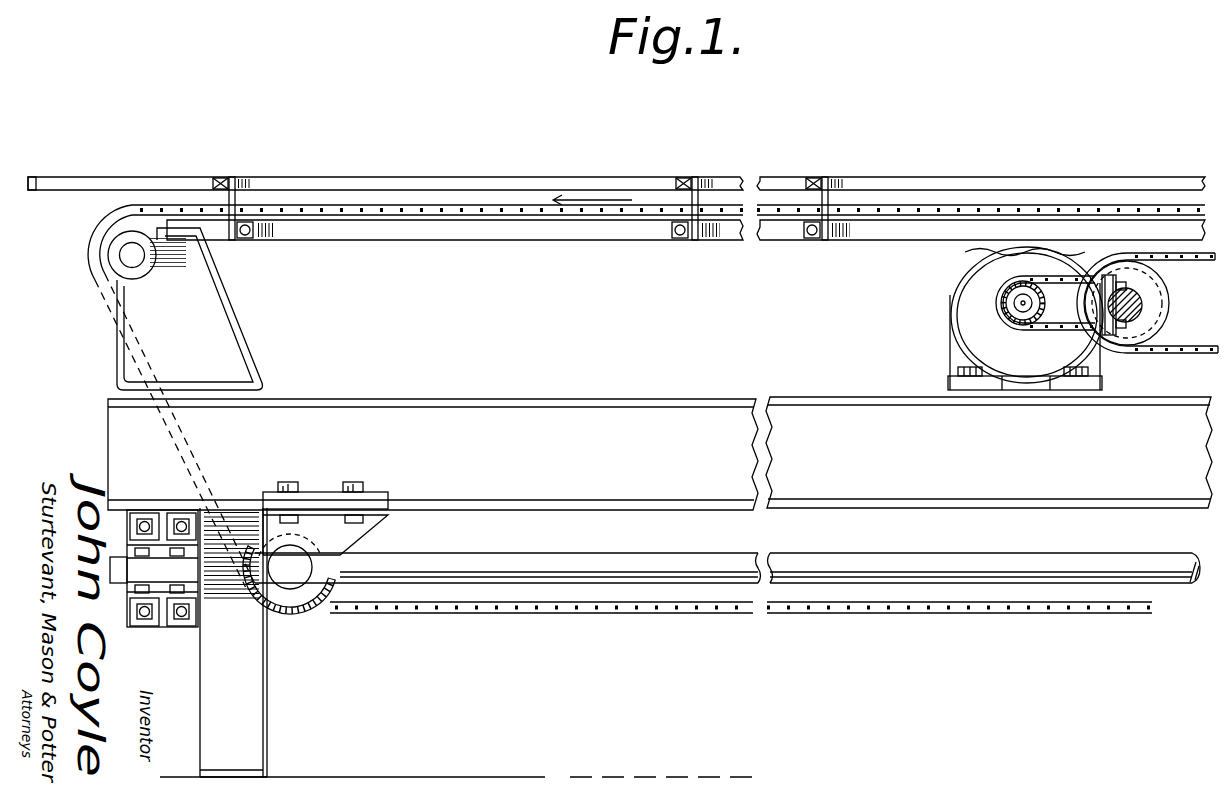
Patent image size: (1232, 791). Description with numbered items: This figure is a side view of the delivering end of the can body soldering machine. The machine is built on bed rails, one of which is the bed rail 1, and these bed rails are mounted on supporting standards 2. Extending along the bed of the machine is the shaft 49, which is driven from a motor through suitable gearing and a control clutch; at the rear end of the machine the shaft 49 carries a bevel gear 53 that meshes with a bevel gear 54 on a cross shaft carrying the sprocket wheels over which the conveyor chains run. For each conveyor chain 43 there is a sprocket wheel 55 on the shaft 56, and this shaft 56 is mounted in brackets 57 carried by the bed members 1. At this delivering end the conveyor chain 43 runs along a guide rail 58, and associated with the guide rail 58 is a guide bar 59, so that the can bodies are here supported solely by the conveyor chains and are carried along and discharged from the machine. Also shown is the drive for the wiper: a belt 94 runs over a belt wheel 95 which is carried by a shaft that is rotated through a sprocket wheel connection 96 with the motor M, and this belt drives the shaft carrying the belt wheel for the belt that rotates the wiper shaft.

The bed rail 1 is at (660, 453).
The standard 2 is at (233, 642).
The conveyor chain 43 is at (628, 218).
The shaft 49 is at (640, 566).
The bevel gear 53 is at (242, 545).
The bevel gear 54 is at (300, 617).
The sprocket wheel 55 is at (128, 222).
The shaft 56 is at (137, 256).
The bracket 57 is at (223, 333).
The guide rail 58 is at (420, 241).
The guide bar 59 is at (386, 192).
The motor M is at (975, 306).
The belt 94 is at (1197, 343).
The belt wheel 95 is at (1152, 302).
The sprocket wheel connection 96 is at (1050, 288).